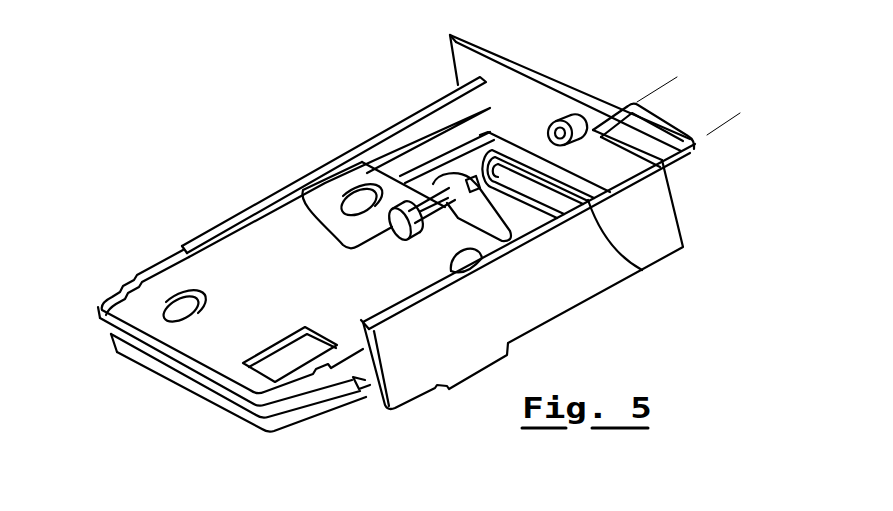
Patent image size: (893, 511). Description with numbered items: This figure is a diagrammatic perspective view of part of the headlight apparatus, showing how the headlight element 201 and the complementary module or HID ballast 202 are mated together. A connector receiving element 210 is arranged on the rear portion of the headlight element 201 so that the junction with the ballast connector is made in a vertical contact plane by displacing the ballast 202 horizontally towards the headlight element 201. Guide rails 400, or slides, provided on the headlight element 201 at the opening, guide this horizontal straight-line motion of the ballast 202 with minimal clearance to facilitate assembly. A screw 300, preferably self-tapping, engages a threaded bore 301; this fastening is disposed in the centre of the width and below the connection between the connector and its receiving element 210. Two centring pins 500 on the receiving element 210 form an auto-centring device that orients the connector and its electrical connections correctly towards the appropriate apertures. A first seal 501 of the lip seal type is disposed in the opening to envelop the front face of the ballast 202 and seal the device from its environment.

The headlight element 201 is at (551, 288).
The complementary module (HID ballast) 202 is at (210, 342).
The connector receiving element 210 is at (676, 110).
The screw 300 is at (300, 188).
The threaded bore 301 is at (569, 118).
The guide rails 400 is at (416, 130).
The centring pins 500 is at (673, 157).
The first seal 501 is at (642, 270).